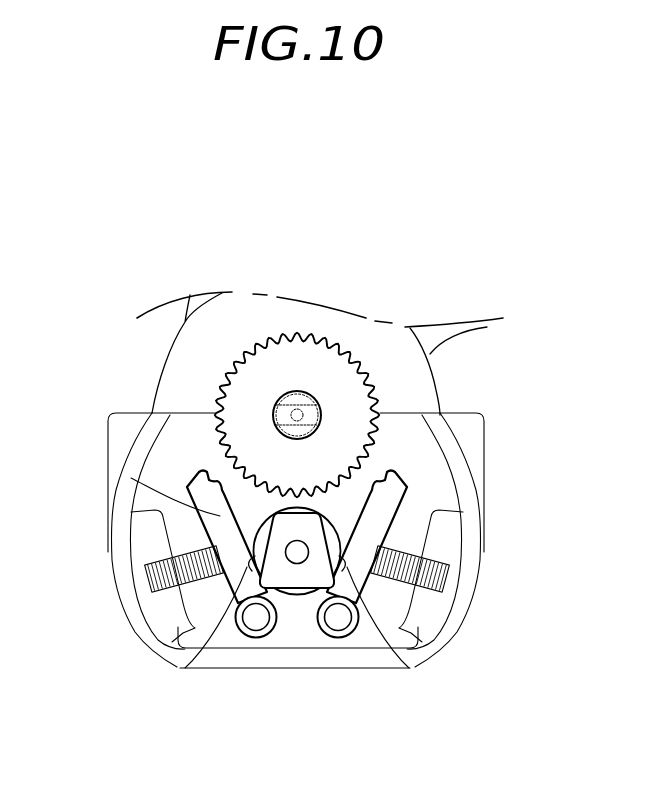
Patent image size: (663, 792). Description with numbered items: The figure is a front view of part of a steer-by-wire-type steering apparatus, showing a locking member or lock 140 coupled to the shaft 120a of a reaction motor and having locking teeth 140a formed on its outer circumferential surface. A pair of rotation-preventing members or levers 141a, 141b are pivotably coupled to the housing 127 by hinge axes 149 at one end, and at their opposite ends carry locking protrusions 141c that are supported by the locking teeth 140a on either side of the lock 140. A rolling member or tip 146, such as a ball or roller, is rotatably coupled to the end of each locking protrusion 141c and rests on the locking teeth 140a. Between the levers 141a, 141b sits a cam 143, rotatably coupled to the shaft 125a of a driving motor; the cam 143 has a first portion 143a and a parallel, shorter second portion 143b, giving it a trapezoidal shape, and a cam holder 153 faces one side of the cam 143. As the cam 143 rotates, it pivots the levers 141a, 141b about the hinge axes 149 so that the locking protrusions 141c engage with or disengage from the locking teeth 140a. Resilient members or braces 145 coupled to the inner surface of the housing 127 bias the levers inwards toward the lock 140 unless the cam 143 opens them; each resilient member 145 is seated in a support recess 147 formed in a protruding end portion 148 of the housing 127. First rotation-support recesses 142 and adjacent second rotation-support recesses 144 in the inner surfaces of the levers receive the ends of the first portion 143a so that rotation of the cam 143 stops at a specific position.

The shaft of the reaction motor 120a is at (285, 413).
The locking member or lock 140 is at (337, 370).
The locking teeth 140a is at (288, 334).
The rolling member or tip 146 is at (143, 447).
The rotation-preventing member or lever 141a is at (200, 512).
The rotation-preventing member or lever 141b is at (380, 520).
The locking protrusion 141c is at (205, 474).
The cam 143 is at (296, 590).
The first portion of the cam 143a is at (307, 590).
The second portion of the cam 143b is at (312, 512).
The protruding end portion 148 is at (447, 542).
The housing 127 is at (133, 606).
The cam holder 153 is at (262, 536).
The resilient member or brace 145 is at (425, 595).
The support recess 147 is at (447, 573).
The second rotation-support recess 144 is at (409, 668).
The first rotation-support recess 142 is at (357, 603).
The hinge axis 149 is at (256, 617).
The shaft of the driving motor 125a is at (187, 668).